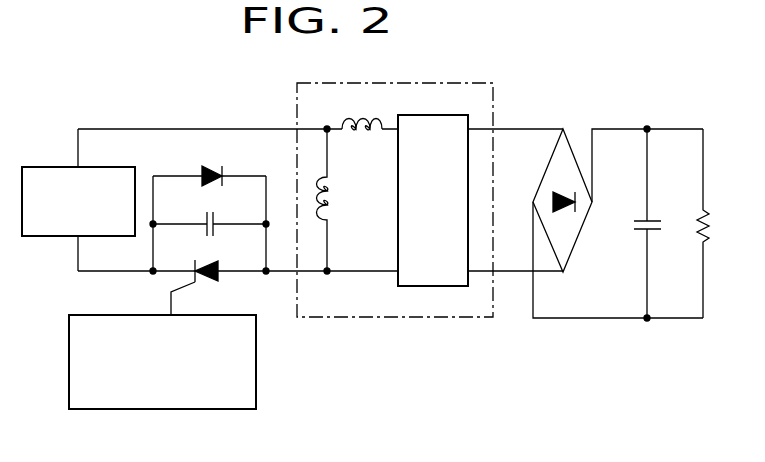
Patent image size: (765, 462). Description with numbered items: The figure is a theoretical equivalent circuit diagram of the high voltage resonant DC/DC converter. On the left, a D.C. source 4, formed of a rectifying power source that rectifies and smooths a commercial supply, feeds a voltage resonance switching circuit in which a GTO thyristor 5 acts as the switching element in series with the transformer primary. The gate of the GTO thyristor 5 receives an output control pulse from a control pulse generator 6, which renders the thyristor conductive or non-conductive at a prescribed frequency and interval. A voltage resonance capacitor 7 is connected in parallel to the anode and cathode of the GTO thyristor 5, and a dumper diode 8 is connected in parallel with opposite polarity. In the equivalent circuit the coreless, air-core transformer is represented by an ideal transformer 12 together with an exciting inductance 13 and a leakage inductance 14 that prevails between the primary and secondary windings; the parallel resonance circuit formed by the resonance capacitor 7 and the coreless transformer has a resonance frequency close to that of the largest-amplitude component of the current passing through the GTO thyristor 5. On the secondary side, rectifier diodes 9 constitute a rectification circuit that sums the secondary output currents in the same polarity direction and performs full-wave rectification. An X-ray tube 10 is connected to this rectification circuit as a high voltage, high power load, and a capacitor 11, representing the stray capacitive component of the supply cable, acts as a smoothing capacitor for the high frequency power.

The D.C. source 4 is at (43, 228).
The GTO thyristor 5 is at (204, 282).
The control pulse generator 6 is at (256, 372).
The voltage resonance capacitor 7 is at (213, 214).
The dumper diode 8 is at (205, 169).
The rectifier diodes 9 is at (561, 152).
The X-ray tube 10 is at (700, 215).
The capacitor 11 is at (636, 229).
The ideal transformer 12 is at (398, 172).
The exciting inductance 13 is at (336, 205).
The leakage inductance 14 is at (354, 118).